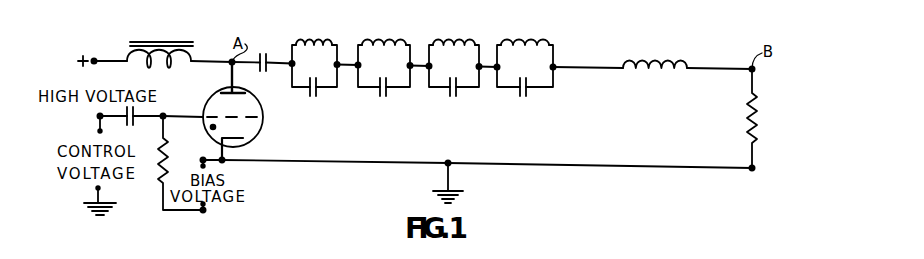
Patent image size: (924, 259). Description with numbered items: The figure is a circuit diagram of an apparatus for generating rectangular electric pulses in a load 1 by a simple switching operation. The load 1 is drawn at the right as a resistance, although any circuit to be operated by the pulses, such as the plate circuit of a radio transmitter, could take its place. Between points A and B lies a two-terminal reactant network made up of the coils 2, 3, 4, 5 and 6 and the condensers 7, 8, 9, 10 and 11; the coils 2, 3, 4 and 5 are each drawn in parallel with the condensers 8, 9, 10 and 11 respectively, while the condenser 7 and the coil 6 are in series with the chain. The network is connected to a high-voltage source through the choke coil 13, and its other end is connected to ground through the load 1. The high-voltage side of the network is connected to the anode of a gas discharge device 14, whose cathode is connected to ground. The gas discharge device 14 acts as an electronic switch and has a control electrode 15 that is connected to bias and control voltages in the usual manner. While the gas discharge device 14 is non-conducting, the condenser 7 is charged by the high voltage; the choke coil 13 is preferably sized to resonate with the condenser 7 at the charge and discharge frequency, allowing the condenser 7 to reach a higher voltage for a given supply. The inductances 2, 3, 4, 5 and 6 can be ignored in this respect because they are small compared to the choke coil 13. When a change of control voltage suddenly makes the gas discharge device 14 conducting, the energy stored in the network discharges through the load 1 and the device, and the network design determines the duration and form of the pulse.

The load 1 is at (762, 108).
The coil 2 is at (318, 39).
The coil 3 is at (386, 39).
The coil 4 is at (453, 39).
The coil 5 is at (521, 39).
The coil 6 is at (671, 61).
The condenser 7 is at (268, 72).
The condenser 8 is at (316, 93).
The condenser 9 is at (386, 93).
The condenser 10 is at (456, 93).
The condenser 11 is at (526, 93).
The choke coil 13 is at (155, 40).
The gas discharge device 14 is at (258, 134).
The control electrode 15 is at (210, 117).